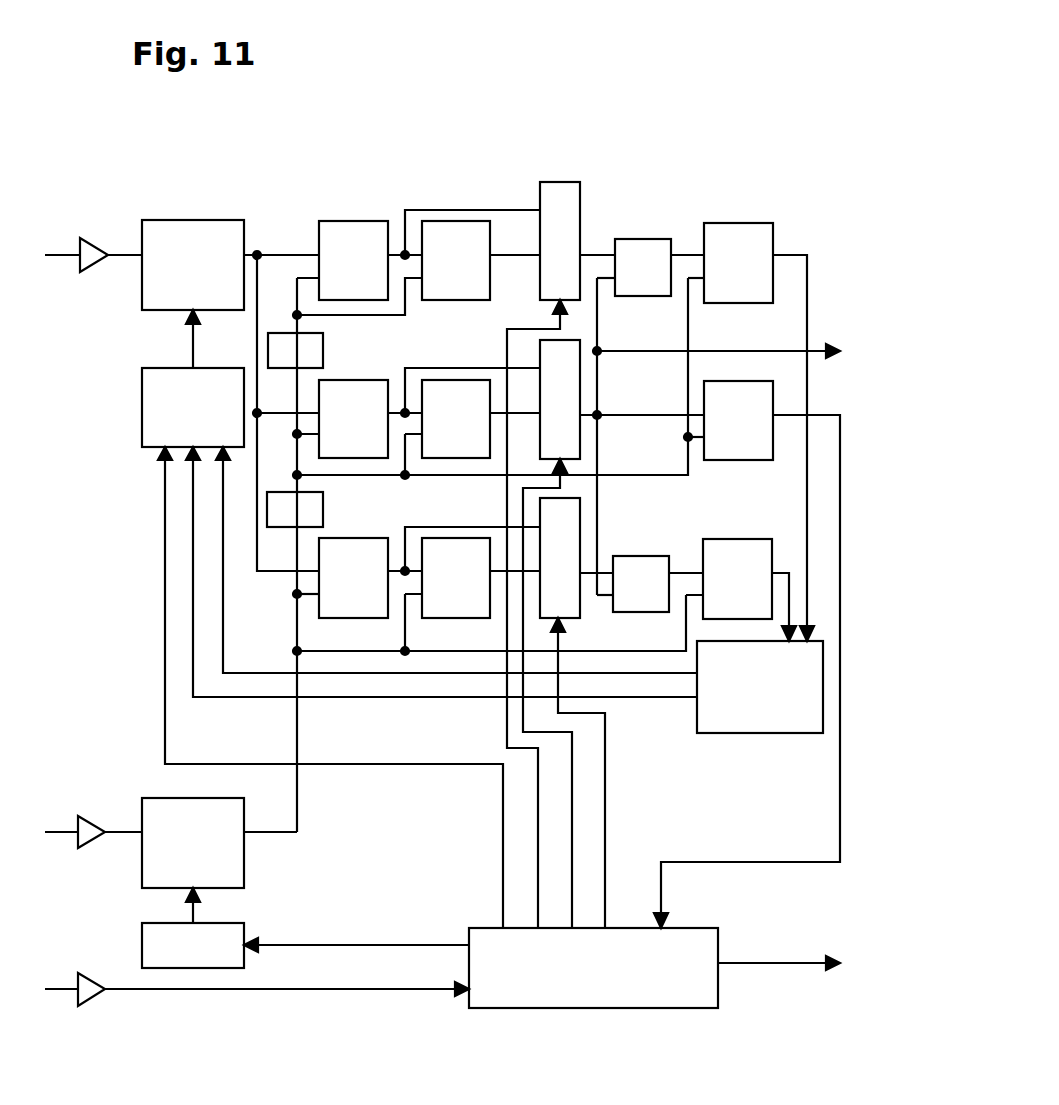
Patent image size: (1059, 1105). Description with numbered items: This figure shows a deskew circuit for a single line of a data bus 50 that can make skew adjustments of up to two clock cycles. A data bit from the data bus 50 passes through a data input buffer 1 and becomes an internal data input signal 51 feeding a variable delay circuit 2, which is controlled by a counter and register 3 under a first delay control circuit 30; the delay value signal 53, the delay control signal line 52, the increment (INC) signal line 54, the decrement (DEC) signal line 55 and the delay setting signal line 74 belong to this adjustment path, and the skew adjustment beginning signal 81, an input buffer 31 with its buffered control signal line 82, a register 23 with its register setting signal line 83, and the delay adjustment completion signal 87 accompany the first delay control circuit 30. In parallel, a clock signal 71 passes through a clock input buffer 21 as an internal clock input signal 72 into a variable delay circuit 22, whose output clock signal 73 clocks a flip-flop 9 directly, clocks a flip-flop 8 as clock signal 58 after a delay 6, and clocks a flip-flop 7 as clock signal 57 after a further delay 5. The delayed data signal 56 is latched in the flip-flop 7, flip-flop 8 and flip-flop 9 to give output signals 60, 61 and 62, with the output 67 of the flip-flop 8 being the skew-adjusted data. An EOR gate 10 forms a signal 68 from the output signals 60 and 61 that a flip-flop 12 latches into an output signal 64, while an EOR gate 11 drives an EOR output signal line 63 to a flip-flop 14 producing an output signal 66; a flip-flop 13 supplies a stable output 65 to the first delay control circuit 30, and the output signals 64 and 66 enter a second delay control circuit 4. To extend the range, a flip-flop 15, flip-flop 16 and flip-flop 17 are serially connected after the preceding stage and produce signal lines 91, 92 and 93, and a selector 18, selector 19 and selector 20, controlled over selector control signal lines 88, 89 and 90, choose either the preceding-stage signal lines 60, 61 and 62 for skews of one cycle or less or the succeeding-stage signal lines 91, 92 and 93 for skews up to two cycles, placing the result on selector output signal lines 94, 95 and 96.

The data input buffer 1 is at (95, 262).
The variable delay circuit 2 is at (206, 218).
The counter and register 3 is at (208, 366).
The delay control circuit (2) 4 is at (768, 734).
The delay 5 is at (325, 355).
The delay 6 is at (325, 513).
The flip-flop 7 is at (355, 218).
The flip-flop 8 is at (352, 378).
The flip-flop 9 is at (352, 536).
The EOR gate 10 is at (627, 236).
The EOR gate 11 is at (627, 552).
The flip-flop 12 is at (738, 222).
The flip-flop 13 is at (738, 380).
The flip-flop 14 is at (732, 537).
The flip-flop 15 is at (432, 216).
The flip-flop 16 is at (432, 383).
The flip-flop 17 is at (432, 530).
The selector 18 is at (566, 183).
The selector 19 is at (582, 344).
The selector 20 is at (580, 612).
The clock input buffer 21 is at (93, 838).
The variable delay circuit 22 is at (208, 796).
The register 23 is at (208, 920).
The delay control circuit (1) 30 is at (698, 928).
The input buffer 31 is at (93, 995).
The data bus 50 is at (62, 250).
The internal data input signal 51 is at (126, 250).
The delay control signal line 52 is at (192, 344).
The delay value signal 53 is at (400, 766).
The increment (INC) signal line 54 is at (408, 699).
The decrement (DEC) signal line 55 is at (360, 675).
The data signal 56 is at (273, 250).
The clock signal 57 is at (302, 278).
The clock signal 58 is at (620, 478).
The output signal 60 is at (470, 212).
The output signal 61 is at (450, 370).
The output signal 62 is at (450, 528).
The EOR output signal line 63 is at (686, 566).
The output signal 64 is at (786, 258).
The output 65 is at (786, 418).
The output signal 66 is at (792, 592).
The output 67 is at (822, 348).
The signal 68 is at (686, 252).
The clock signal 71 is at (62, 827).
The internal clock input signal 72 is at (126, 827).
The clock signal 73 is at (268, 834).
The delay setting signal line 74 is at (192, 908).
The skew adjustment beginning signal 81 is at (62, 983).
The buffered control signal line 82 is at (340, 988).
The register setting signal line 83 is at (340, 946).
The delay adjustment completion signal 87 is at (732, 961).
The selector control signal line 88 is at (605, 770).
The selector control signal line 89 is at (572, 803).
The selector control signal line 90 is at (538, 832).
The signal line 91 is at (500, 244).
The signal line 92 is at (516, 410).
The signal line 93 is at (510, 621).
The selector output signal line 94 is at (596, 254).
The selector output signal line 95 is at (620, 412).
The selector output signal line 96 is at (608, 566).